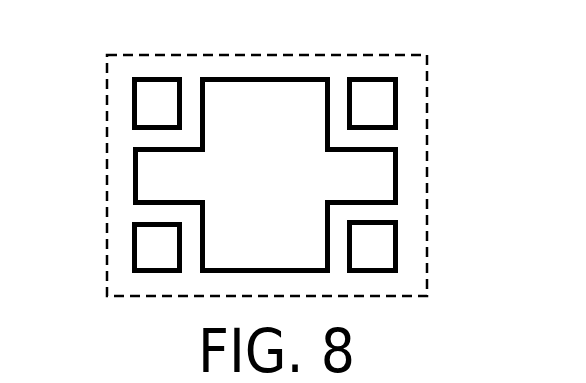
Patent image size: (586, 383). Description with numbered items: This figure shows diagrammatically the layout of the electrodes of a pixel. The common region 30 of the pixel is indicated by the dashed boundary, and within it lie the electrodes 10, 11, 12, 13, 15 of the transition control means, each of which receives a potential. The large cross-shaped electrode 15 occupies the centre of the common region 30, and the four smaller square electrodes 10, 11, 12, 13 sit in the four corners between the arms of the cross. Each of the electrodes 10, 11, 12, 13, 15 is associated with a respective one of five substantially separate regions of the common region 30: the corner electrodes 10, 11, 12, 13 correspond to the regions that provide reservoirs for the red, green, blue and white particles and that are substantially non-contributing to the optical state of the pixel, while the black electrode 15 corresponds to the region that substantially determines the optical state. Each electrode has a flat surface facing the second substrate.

The electrode 10 is at (132, 250).
The electrode 11 is at (398, 250).
The electrode 12 is at (398, 101).
The electrode 13 is at (132, 105).
The electrode 15 is at (264, 77).
The common region 30 is at (430, 65).